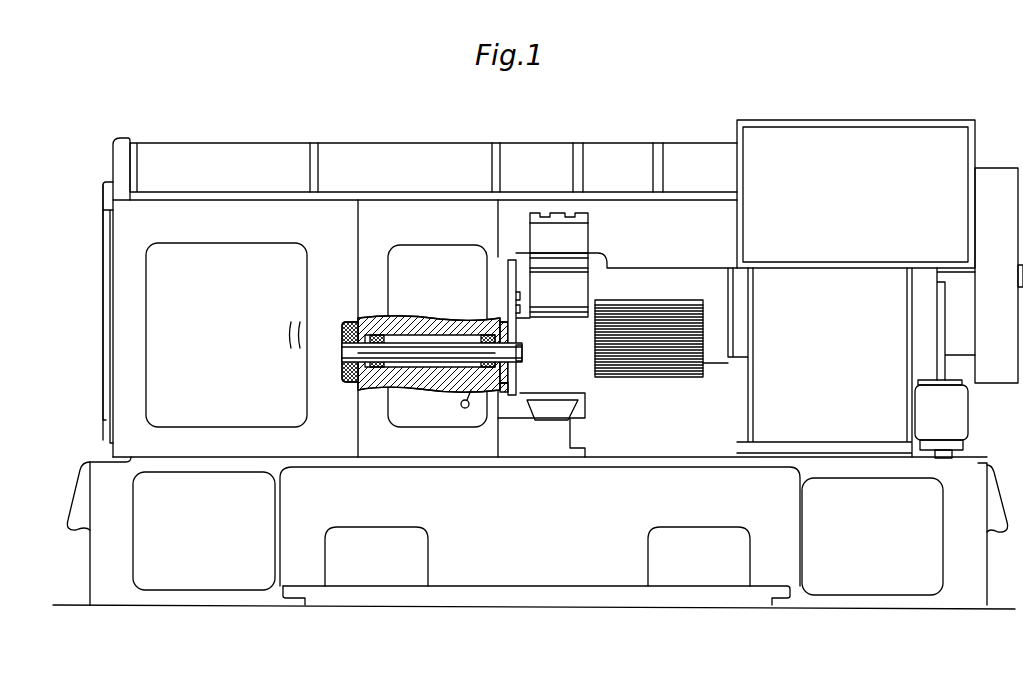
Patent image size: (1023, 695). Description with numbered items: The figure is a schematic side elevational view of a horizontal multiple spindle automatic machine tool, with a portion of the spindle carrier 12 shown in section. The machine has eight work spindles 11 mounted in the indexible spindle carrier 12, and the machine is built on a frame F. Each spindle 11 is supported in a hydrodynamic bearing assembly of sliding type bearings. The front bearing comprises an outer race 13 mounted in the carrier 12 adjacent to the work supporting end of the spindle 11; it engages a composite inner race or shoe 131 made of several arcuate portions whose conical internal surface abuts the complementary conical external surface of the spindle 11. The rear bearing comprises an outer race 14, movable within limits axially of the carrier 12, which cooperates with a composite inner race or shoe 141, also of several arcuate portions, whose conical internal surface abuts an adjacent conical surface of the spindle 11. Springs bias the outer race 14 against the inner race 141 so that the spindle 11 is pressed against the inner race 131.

The frame F is at (101, 223).
The work spindle 11 is at (447, 345).
The spindle carrier 12 is at (412, 320).
The outer race 13 is at (498, 322).
The outer race 14 is at (380, 321).
The composite inner race or shoe 141 is at (379, 368).
The composite inner race or shoe 131 is at (500, 393).